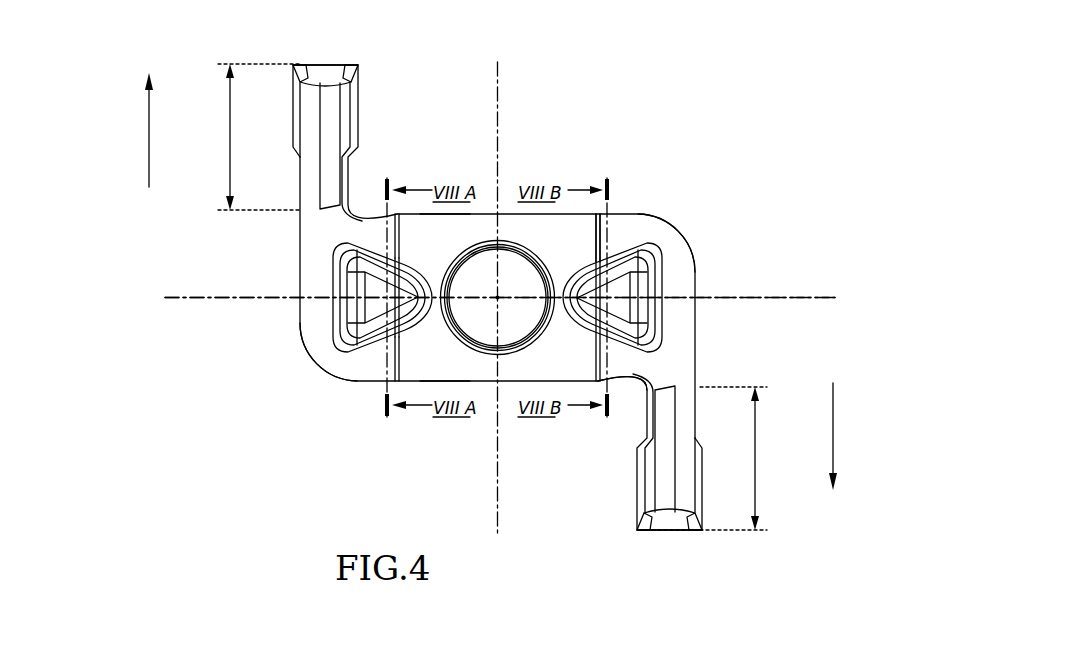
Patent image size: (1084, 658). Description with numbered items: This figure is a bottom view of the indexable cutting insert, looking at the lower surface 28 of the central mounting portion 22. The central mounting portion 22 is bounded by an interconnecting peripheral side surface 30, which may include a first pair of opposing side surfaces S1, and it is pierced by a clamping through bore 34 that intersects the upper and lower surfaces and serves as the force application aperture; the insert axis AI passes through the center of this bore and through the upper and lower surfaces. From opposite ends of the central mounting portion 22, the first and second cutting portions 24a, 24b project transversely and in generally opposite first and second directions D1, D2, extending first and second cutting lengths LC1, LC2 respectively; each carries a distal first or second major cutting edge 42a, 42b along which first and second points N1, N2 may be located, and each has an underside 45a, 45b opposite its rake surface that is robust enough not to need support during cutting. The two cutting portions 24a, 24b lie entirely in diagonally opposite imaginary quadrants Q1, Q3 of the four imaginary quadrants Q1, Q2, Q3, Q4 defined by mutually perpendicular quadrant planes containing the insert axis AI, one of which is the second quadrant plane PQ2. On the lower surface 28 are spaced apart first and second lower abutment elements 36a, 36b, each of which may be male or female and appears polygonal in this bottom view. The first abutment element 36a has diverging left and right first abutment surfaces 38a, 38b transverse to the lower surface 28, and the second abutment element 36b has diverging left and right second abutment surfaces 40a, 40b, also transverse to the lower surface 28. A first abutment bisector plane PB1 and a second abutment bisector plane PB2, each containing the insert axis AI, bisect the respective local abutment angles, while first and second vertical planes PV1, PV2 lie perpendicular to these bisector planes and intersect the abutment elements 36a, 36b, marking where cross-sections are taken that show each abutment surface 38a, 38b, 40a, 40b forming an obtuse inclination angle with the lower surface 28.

The central mounting portion 22 is at (468, 230).
The first cutting portion 24a is at (364, 100).
The second cutting portion 24b is at (640, 489).
The lower surface 28 is at (310, 355).
The peripheral side surface 30 is at (646, 204).
The clamping through bore 34 is at (494, 323).
The first lower abutment element 36a is at (348, 308).
The second lower abutment element 36b is at (648, 287).
The left first abutment surface 38a is at (390, 333).
The right first abutment surface 38b is at (392, 262).
The left second abutment surface 40a is at (613, 265).
The right second abutment surface 40b is at (640, 375).
The first major cutting edge 42a is at (330, 64).
The second major cutting edge 42b is at (672, 533).
The underside of first cutting portion 45a is at (294, 117).
The underside of second cutting portion 45b is at (698, 468).
The first point N1 is at (296, 67).
The second point N2 is at (702, 528).
The insert axis AI is at (498, 298).
The second quadrant plane PQ2 is at (490, 302).
The first abutment bisector plane PB1 is at (279, 299).
The second abutment bisector plane PB2 is at (702, 299).
The first vertical plane PV1 is at (383, 305).
The second vertical plane PV2 is at (606, 305).
The first pair of opposing side surfaces S1 is at (513, 214).
The first imaginary quadrant Q1 is at (424, 127).
The second imaginary quadrant Q2 is at (417, 467).
The third imaginary quadrant Q3 is at (572, 467).
The fourth imaginary quadrant Q4 is at (577, 127).
The first cutting length LC1 is at (254, 137).
The second cutting length LC2 is at (703, 458).
The first direction D1 is at (149, 120).
The second direction D2 is at (832, 451).